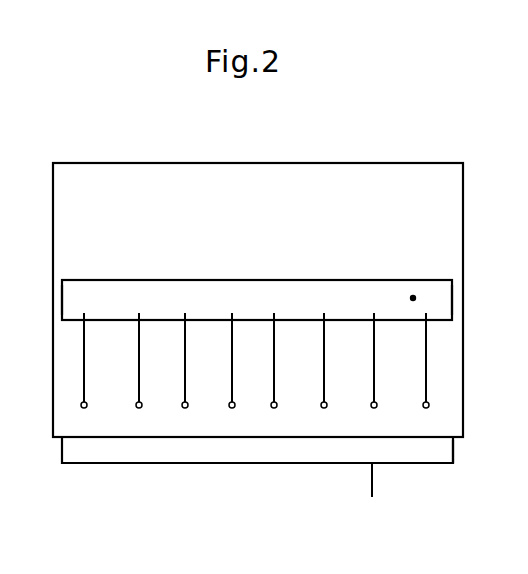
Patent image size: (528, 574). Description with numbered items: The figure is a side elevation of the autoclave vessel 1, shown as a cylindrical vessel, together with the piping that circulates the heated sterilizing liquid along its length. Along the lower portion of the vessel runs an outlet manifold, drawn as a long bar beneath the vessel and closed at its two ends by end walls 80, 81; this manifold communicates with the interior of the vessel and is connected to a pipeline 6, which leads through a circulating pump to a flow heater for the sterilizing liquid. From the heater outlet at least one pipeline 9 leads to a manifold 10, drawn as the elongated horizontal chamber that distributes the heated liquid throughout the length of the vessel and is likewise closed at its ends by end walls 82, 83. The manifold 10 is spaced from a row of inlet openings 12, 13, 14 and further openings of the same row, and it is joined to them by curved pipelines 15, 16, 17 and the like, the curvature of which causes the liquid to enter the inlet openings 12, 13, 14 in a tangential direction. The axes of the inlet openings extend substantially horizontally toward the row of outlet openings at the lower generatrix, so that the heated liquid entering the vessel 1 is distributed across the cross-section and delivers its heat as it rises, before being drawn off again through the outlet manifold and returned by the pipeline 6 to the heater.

The vessel 1 is at (58, 248).
The pipeline 6 is at (372, 485).
The pipeline 9 is at (413, 298).
The manifold 10 is at (312, 290).
The inlet opening 12 is at (85, 408).
The inlet opening 13 is at (140, 408).
The inlet opening 14 is at (186, 408).
The curved pipeline 15 is at (85, 350).
The curved pipeline 16 is at (140, 350).
The curved pipeline 17 is at (186, 355).
The end wall 80 is at (62, 450).
The end wall 81 is at (453, 453).
The end wall 82 is at (62, 298).
The end wall 83 is at (452, 302).